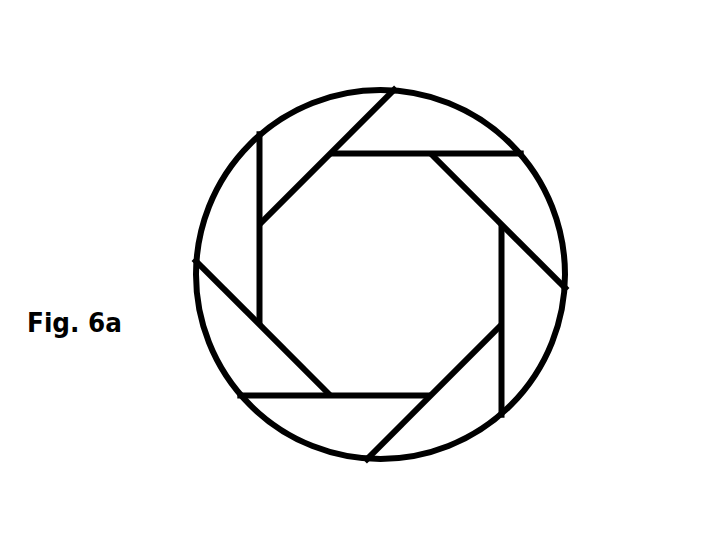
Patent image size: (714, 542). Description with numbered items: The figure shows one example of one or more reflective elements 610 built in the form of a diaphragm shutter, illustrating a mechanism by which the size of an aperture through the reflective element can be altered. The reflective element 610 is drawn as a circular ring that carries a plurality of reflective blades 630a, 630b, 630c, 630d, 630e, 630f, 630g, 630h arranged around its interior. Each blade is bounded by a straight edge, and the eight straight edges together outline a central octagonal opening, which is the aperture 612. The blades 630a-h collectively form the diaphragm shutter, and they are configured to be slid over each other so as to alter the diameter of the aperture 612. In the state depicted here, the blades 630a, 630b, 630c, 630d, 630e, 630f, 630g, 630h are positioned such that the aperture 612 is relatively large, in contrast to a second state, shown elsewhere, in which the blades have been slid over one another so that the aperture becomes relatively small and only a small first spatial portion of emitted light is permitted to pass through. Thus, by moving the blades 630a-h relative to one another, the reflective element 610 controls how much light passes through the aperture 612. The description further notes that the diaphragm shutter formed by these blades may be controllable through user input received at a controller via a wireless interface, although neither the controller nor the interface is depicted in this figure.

The reflective element 610 is at (76, 186).
The aperture 612 is at (382, 158).
The reflective blade 630a is at (420, 107).
The reflective blade 630b is at (518, 205).
The reflective blade 630c is at (532, 327).
The reflective blade 630d is at (438, 432).
The reflective blade 630e is at (333, 428).
The reflective blade 630f is at (233, 363).
The reflective blade 630g is at (240, 210).
The reflective blade 630h is at (313, 137).